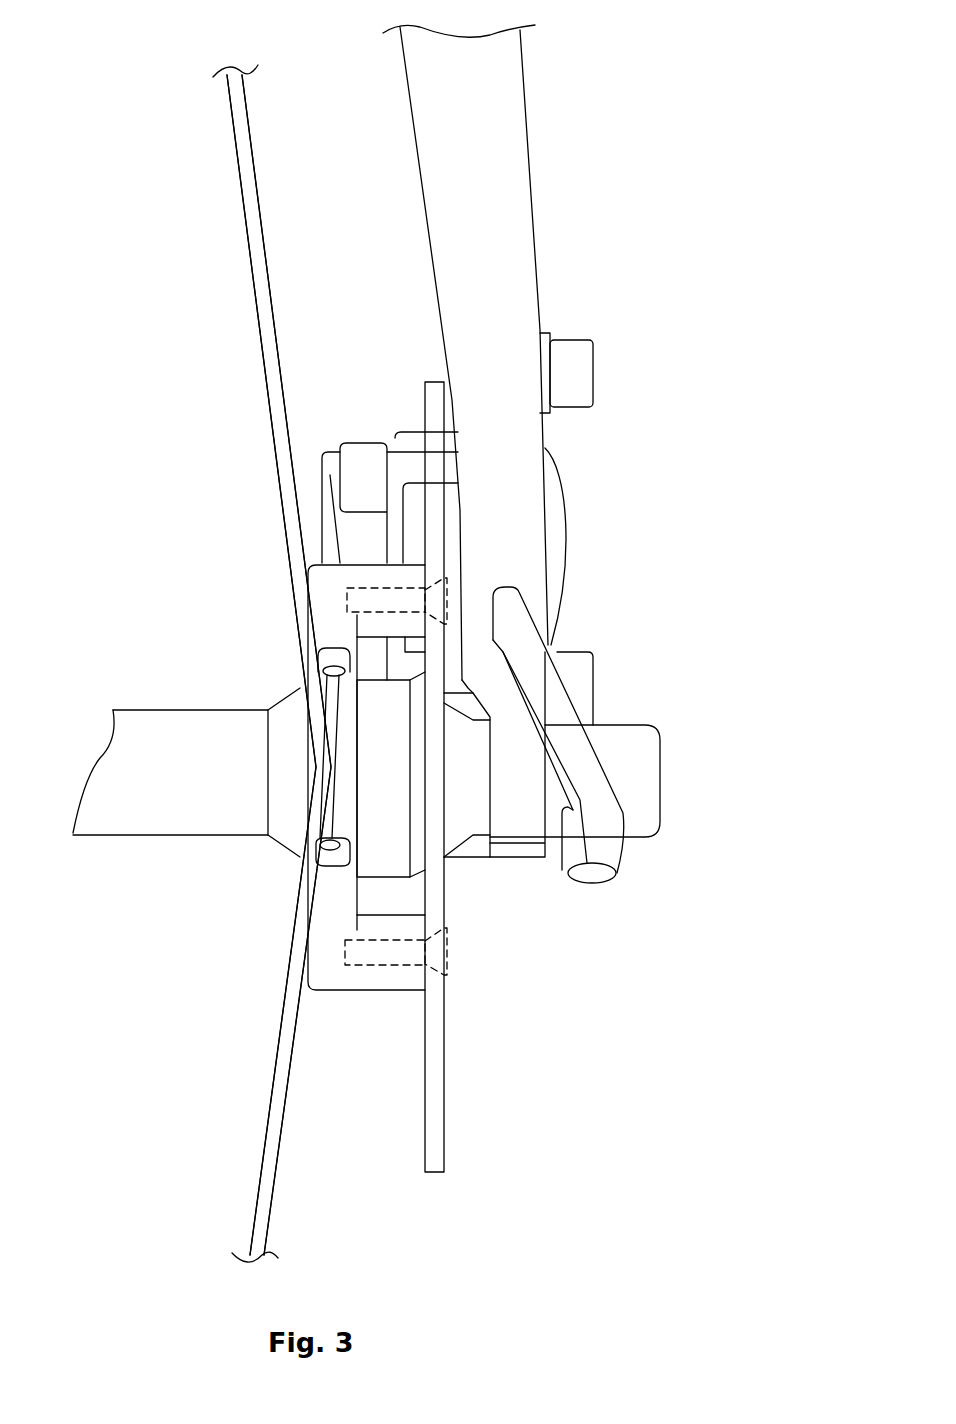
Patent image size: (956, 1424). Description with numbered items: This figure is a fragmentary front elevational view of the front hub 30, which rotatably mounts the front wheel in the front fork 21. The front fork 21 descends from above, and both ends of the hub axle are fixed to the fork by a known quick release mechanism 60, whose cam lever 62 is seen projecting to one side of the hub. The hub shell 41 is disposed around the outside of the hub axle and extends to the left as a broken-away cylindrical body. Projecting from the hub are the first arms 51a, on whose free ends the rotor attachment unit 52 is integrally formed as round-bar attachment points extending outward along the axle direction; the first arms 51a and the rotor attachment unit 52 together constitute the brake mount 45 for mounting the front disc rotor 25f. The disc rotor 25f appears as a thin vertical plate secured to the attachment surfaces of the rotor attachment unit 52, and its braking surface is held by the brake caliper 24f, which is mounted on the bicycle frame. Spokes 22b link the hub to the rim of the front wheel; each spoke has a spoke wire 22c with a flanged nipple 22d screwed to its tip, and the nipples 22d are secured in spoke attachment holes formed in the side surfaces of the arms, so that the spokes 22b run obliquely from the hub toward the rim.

The front fork 21 is at (505, 225).
The spokes 22b is at (268, 322).
The spoke wires 22c is at (272, 435).
The nipples 22d is at (333, 655).
The brake caliper 24f is at (397, 465).
The disc rotor 25f is at (433, 1127).
The front hub 30 is at (148, 685).
The hub shell 41 is at (117, 817).
The brake mount 45 is at (345, 1002).
The first arms 51a is at (344, 891).
The rotor attachment unit 52 is at (392, 982).
The quick release mechanism 60 is at (653, 723).
The cam lever 62 is at (573, 720).